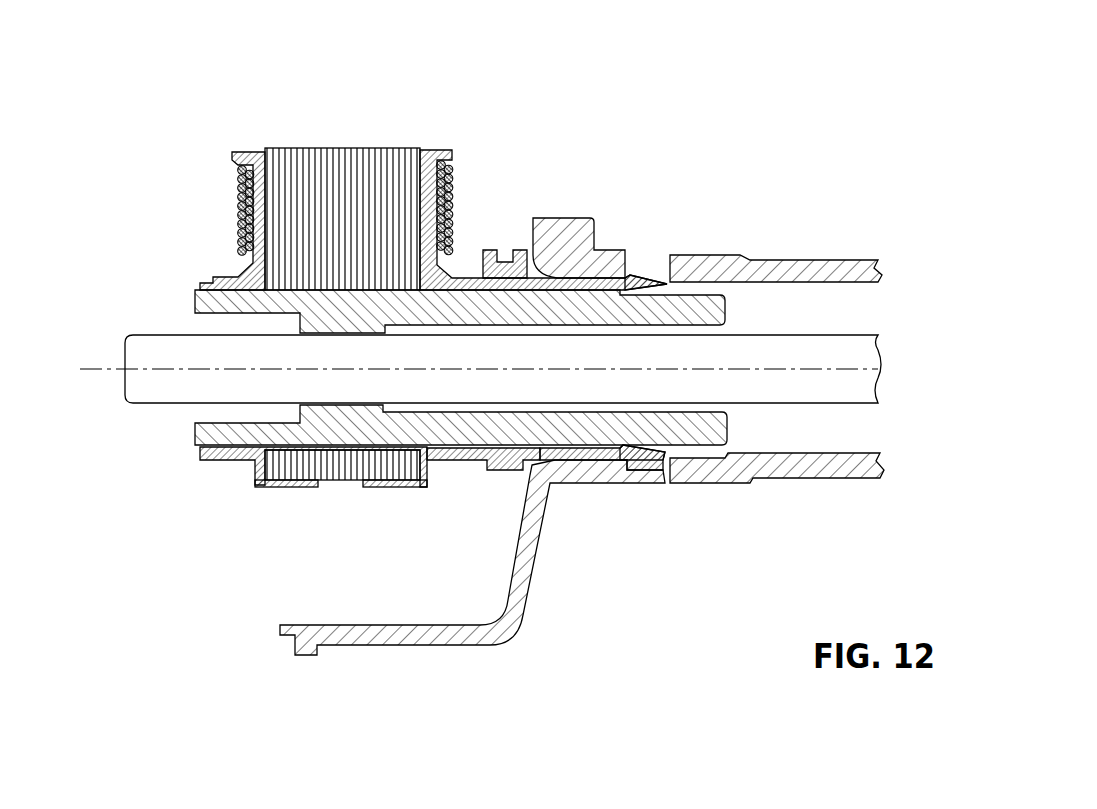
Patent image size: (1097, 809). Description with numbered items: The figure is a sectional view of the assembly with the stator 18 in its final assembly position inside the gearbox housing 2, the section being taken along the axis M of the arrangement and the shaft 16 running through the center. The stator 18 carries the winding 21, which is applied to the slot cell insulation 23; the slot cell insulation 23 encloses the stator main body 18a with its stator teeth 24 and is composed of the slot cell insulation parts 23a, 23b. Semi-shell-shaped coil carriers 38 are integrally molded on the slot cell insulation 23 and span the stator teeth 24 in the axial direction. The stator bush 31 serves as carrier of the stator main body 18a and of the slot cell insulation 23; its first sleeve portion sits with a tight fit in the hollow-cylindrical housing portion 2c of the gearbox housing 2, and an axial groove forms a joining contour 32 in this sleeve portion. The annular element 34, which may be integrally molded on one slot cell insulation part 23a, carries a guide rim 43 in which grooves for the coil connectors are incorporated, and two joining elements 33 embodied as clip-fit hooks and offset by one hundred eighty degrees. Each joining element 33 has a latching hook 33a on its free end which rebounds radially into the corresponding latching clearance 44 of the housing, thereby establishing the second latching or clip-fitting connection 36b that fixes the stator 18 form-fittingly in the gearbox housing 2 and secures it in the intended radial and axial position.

The gearbox housing 2 is at (385, 630).
The hollow-cylindrical housing portion 2c is at (798, 270).
The shaft 16 is at (162, 385).
The stator 18 is at (370, 175).
The stator main body 18a is at (342, 184).
The winding 21 is at (238, 213).
The slot cell insulation 23 is at (370, 184).
The slot cell insulation part 23a is at (428, 150).
The slot cell insulation part 23b is at (240, 277).
The stator teeth 24 is at (340, 167).
The stator bush 31 is at (710, 422).
The joining contour 32 is at (695, 293).
The joining element 33 is at (590, 260).
The latching hook 33a is at (650, 273).
The annular element 34 is at (452, 460).
The second latching or clip-fitting connection 36b is at (628, 213).
The coil carrier 38 is at (290, 487).
The guide rim 43 is at (488, 250).
The latching clearance 44 is at (660, 260).
The axis M is at (90, 370).